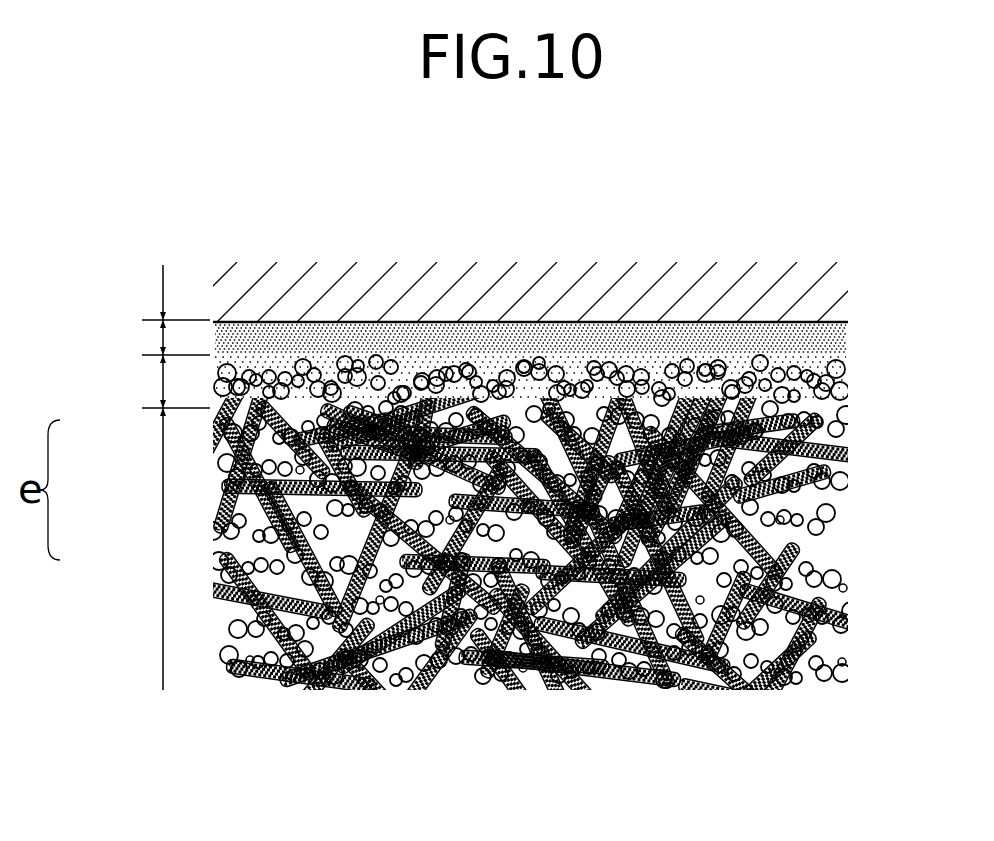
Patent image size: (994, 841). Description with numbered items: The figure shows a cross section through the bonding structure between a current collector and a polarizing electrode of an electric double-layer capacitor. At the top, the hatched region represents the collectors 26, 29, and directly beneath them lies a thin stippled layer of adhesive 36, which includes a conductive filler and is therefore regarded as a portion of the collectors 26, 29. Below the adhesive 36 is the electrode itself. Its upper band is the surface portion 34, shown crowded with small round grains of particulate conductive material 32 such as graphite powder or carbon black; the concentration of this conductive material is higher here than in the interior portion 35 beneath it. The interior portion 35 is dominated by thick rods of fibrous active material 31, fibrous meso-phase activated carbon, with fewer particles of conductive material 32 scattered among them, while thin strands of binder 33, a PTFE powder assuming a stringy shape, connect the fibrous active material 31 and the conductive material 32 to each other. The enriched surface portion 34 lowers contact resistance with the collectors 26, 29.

The collector 26 is at (163, 288).
The collector 29 is at (478, 253).
The adhesive 36 is at (163, 338).
The surface portion 34 is at (163, 383).
The interior portion 35 is at (498, 551).
The fibrous active material 31 is at (843, 477).
The particulate conductive material 32 is at (765, 366).
The binder 33 is at (845, 660).